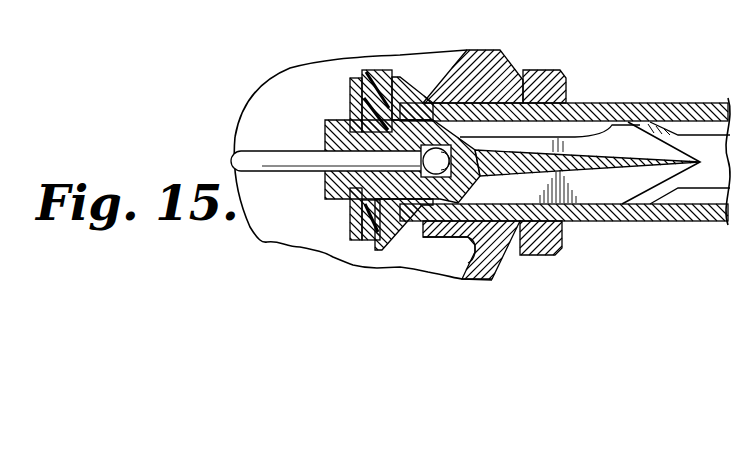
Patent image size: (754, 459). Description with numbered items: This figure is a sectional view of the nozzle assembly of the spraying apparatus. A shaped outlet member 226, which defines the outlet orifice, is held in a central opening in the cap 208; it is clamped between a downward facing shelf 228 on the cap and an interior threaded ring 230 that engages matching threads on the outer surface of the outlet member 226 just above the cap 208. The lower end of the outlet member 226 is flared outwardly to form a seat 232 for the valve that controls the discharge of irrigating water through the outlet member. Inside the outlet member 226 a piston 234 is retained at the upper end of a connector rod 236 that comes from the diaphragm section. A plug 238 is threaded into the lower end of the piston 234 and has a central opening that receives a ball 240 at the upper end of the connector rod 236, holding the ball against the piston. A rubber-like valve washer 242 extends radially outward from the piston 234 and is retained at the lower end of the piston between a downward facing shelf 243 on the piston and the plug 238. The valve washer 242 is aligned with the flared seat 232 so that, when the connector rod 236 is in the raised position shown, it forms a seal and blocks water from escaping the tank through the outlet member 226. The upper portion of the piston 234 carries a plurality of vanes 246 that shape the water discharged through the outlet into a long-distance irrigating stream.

The cap 208 is at (492, 262).
The shaped member 226 is at (703, 219).
The downward facing shelf 228 is at (445, 238).
The interior threaded ring 230 is at (550, 255).
The seat 232 is at (387, 247).
The piston 234 is at (612, 124).
The connector rod 236 is at (272, 160).
The plug 238 is at (398, 74).
The ball 240 is at (433, 144).
The valve washer 242 is at (372, 53).
The downward facing shelf 243 is at (349, 100).
The vanes 246 is at (641, 180).